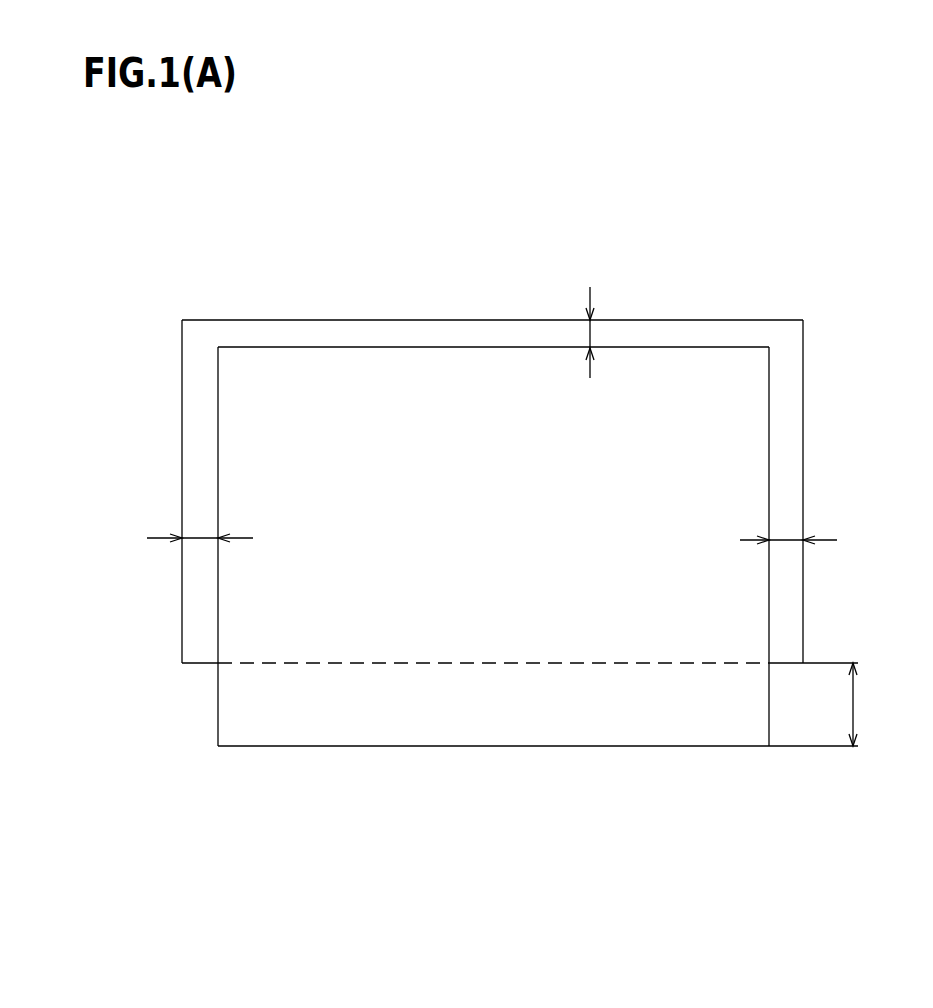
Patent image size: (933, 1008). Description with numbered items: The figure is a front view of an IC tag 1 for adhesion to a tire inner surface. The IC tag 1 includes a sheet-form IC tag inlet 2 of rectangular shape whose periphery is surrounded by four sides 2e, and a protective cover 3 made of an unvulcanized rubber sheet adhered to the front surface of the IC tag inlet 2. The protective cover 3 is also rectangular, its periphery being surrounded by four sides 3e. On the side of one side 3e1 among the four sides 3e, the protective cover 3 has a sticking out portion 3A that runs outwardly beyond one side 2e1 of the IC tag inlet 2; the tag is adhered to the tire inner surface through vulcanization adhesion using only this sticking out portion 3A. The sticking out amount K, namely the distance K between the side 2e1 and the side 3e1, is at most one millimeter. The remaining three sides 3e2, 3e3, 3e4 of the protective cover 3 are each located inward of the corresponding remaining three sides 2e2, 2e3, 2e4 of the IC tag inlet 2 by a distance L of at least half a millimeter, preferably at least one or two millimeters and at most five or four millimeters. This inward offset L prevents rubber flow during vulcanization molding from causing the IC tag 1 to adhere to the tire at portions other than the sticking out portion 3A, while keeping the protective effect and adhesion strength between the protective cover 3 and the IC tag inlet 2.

The IC tag 1 is at (715, 282).
The IC tag inlet 2 is at (440, 337).
The protective cover 3 is at (532, 403).
The sides 2e is at (492, 539).
The side 2e1 is at (397, 663).
The side 2e2 is at (803, 403).
The side 2e3 is at (363, 319).
The side 2e4 is at (182, 403).
The sides 3e is at (492, 539).
The side 3e1 is at (553, 747).
The side 3e2 is at (769, 498).
The side 3e3 is at (291, 347).
The side 3e4 is at (218, 497).
The sticking out portion 3A is at (870, 668).
The sticking out amount K is at (842, 704).
The distance L is at (591, 335).